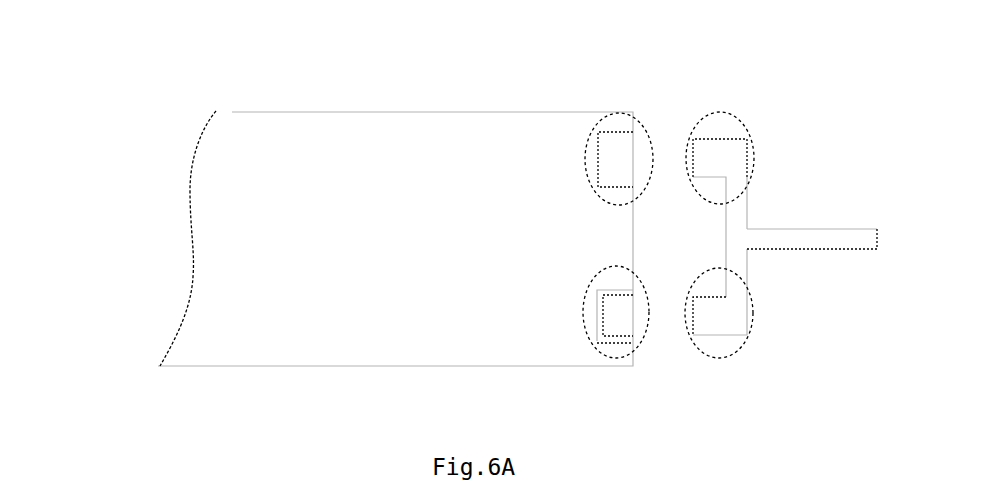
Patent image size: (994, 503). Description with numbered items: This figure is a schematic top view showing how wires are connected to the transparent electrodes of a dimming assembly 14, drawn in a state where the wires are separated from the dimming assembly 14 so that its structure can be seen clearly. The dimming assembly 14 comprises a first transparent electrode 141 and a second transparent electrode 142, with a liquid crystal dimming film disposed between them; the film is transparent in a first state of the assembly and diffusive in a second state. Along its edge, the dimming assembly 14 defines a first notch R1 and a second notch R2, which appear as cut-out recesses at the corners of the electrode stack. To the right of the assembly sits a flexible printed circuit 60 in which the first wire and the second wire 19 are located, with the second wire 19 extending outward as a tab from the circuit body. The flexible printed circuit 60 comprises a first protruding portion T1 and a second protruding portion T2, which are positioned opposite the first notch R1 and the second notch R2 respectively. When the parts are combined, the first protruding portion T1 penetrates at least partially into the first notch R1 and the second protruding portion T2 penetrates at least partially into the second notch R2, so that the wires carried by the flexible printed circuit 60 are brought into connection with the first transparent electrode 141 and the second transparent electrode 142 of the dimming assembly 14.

The dimming assembly 14 is at (388, 80).
The second transparent electrode 142 is at (213, 223).
The first transparent electrode 141 is at (628, 326).
The first notch R1 is at (585, 335).
The second notch R2 is at (585, 157).
The flexible printed circuit 60 is at (721, 66).
The second wire 19 is at (865, 235).
The first protruding portion T1 is at (753, 330).
The second protruding portion T2 is at (755, 152).